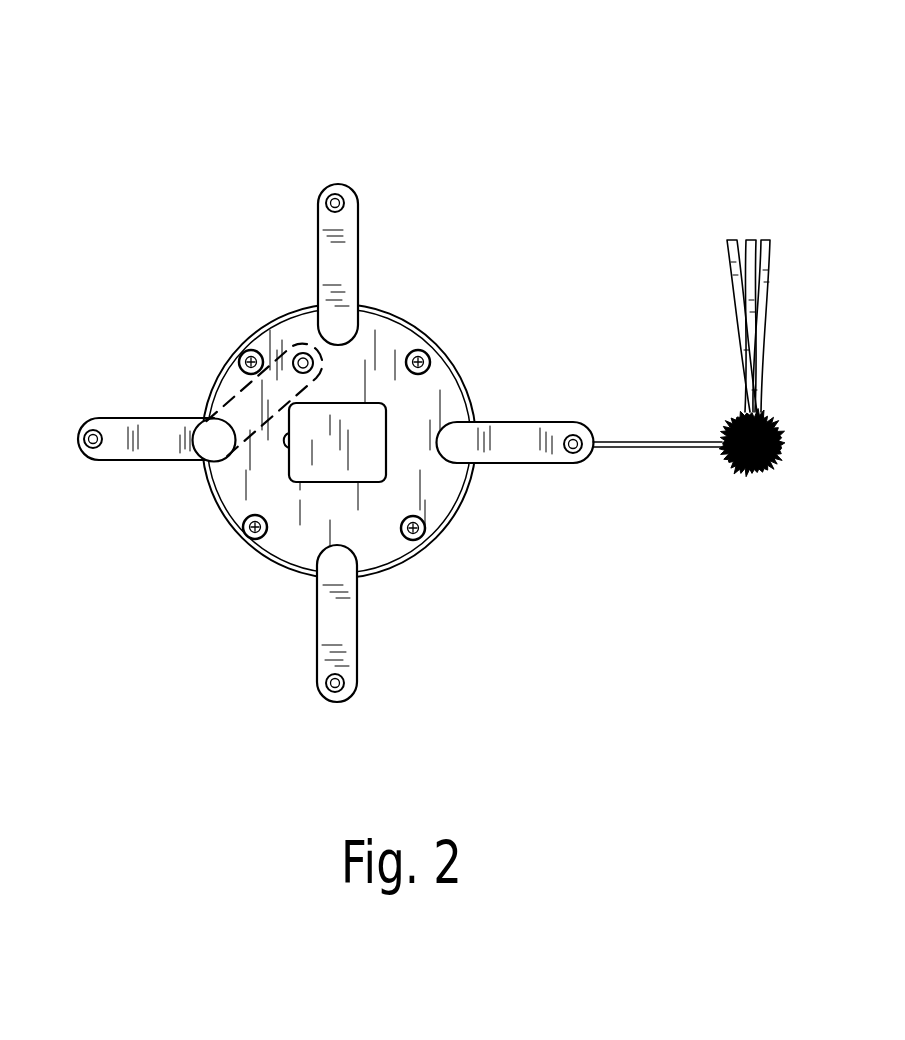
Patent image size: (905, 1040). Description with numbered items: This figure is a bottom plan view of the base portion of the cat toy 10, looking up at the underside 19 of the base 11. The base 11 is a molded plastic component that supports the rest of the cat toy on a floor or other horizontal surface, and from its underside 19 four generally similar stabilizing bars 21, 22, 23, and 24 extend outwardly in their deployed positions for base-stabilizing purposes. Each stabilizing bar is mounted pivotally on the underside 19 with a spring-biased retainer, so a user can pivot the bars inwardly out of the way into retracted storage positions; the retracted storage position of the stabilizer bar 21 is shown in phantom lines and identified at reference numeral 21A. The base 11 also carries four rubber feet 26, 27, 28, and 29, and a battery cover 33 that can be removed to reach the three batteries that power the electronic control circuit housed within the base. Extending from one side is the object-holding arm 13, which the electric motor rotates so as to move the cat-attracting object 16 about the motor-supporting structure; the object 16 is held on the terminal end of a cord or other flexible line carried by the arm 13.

The cat toy 10 is at (103, 114).
The base 11 is at (412, 316).
The object-holding arm 13 is at (660, 441).
The cat-attracting object 16 is at (755, 472).
The underside 19 is at (302, 328).
The stabilizing bar 21 is at (100, 461).
The retracted storage position of stabilizer bar 21A is at (235, 395).
The stabilizing bar 22 is at (358, 683).
The stabilizing bar 23 is at (575, 465).
The stabilizing bar 24 is at (318, 206).
The rubber foot 26 is at (242, 540).
The rubber foot 27 is at (435, 537).
The rubber foot 28 is at (428, 352).
The rubber foot 29 is at (246, 352).
The battery cover 33 is at (376, 430).